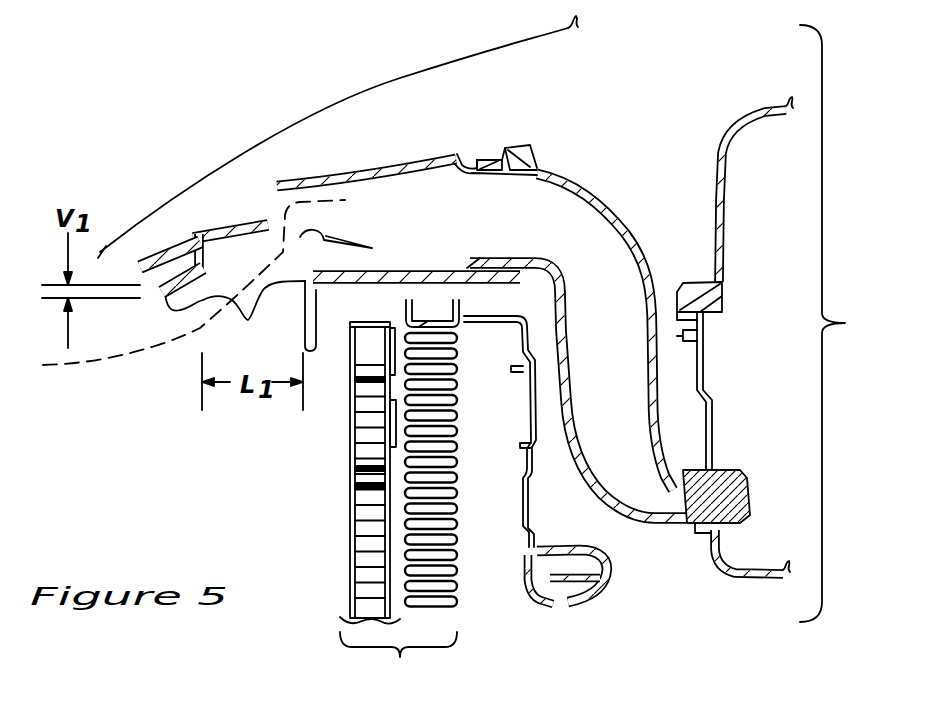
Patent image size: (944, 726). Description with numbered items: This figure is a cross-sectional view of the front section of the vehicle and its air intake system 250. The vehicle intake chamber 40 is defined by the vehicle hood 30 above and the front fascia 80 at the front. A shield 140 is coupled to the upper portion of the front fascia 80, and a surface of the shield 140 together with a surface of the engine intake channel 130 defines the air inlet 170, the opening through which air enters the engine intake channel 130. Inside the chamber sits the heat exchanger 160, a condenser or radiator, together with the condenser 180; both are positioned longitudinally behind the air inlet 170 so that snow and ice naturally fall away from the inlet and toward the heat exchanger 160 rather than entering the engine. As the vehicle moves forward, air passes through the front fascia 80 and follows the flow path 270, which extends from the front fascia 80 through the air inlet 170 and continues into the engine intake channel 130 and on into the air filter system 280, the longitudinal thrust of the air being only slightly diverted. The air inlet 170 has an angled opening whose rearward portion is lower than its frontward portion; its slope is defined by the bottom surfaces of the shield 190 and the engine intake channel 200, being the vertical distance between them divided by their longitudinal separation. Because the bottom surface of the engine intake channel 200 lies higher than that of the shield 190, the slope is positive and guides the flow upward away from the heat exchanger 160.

The vehicle hood 30 is at (343, 100).
The vehicle intake chamber 40 is at (277, 435).
The front fascia 80 is at (152, 250).
The engine intake channel 130 is at (577, 183).
The shield 140 is at (218, 233).
The heat exchanger 160 is at (399, 495).
The air inlet 170 is at (259, 320).
The condenser 180 is at (363, 600).
The shield 190 is at (172, 313).
The engine intake channel 200 is at (447, 282).
The air intake system 250 is at (853, 323).
The flow path 270 is at (345, 200).
The air filter system 280 is at (720, 470).